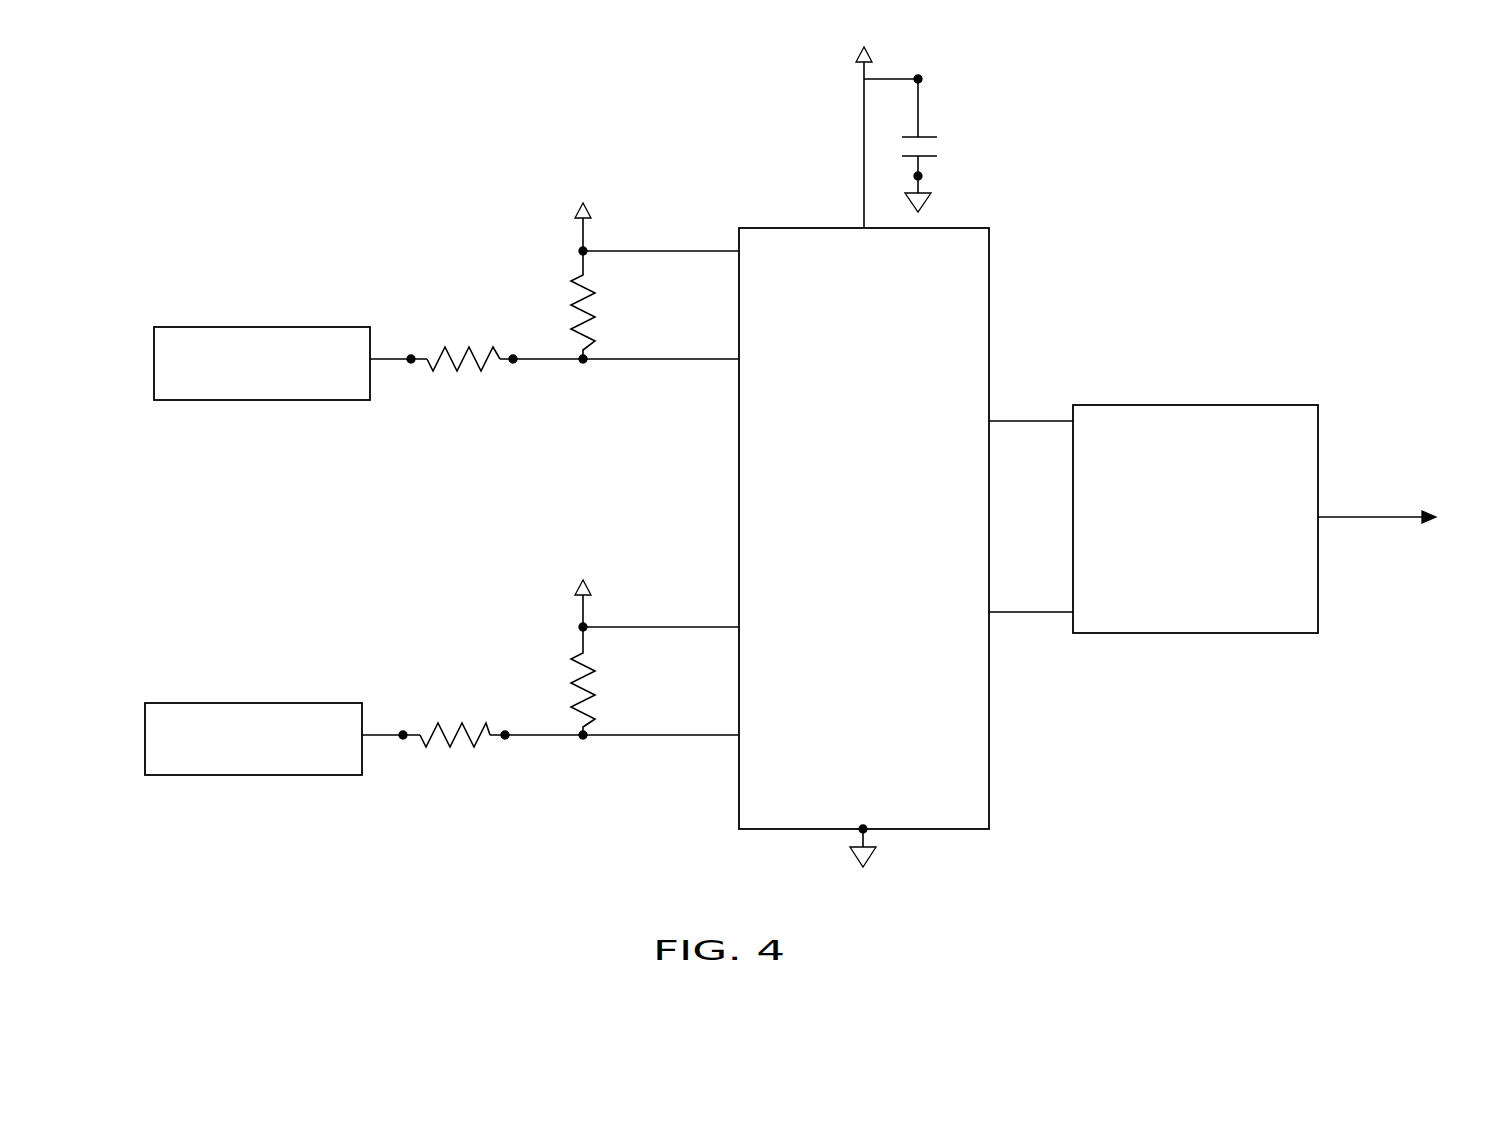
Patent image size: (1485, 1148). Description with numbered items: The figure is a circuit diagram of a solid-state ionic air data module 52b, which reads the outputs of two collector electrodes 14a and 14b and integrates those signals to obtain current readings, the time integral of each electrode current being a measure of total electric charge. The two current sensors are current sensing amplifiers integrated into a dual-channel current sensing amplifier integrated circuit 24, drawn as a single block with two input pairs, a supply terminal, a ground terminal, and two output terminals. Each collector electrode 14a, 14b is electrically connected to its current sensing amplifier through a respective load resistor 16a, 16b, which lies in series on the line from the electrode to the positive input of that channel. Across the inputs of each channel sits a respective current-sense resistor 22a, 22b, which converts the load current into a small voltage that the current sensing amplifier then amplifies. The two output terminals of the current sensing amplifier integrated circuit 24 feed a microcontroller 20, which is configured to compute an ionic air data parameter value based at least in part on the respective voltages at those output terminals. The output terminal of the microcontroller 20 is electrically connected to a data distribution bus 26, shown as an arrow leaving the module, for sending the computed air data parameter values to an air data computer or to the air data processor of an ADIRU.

The collector electrode 14a is at (212, 326).
The collector electrode 14b is at (203, 702).
The load resistor 16a is at (458, 365).
The load resistor 16b is at (450, 738).
The current-sense resistor 22a is at (578, 300).
The current-sense resistor 22b is at (578, 675).
The dual-channel current sensing amplifier integrated circuit 24 is at (989, 287).
The microcontroller 20 is at (1265, 404).
The data distribution bus 26 is at (1375, 517).
The solid-state ionic air data module 52b is at (1120, 228).